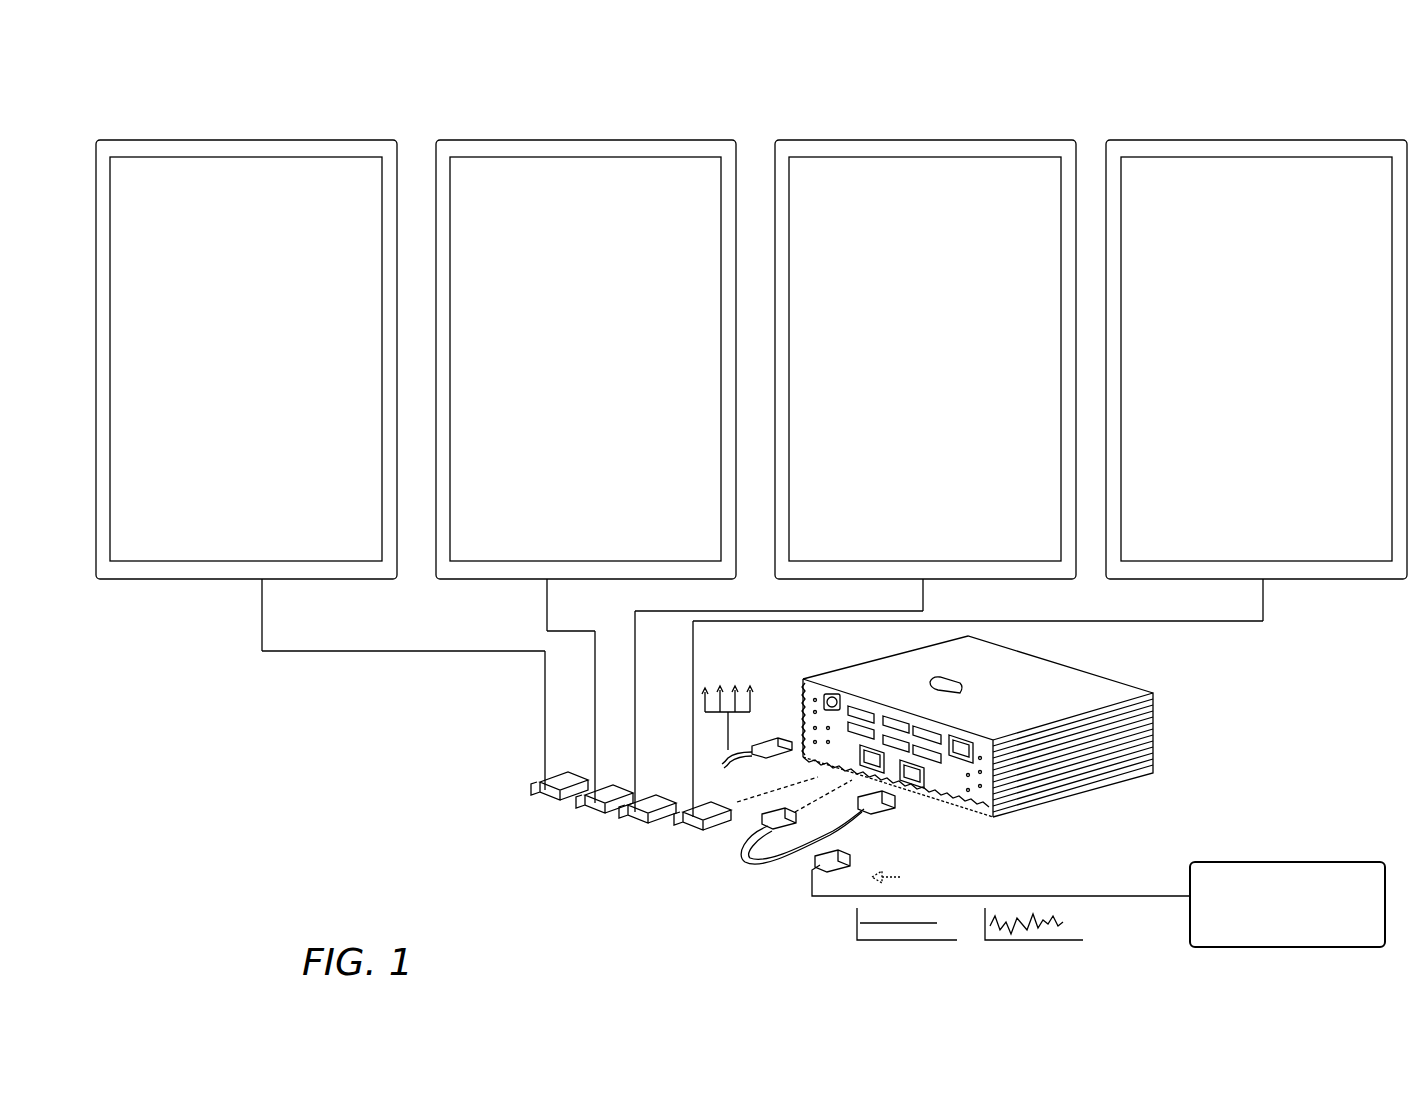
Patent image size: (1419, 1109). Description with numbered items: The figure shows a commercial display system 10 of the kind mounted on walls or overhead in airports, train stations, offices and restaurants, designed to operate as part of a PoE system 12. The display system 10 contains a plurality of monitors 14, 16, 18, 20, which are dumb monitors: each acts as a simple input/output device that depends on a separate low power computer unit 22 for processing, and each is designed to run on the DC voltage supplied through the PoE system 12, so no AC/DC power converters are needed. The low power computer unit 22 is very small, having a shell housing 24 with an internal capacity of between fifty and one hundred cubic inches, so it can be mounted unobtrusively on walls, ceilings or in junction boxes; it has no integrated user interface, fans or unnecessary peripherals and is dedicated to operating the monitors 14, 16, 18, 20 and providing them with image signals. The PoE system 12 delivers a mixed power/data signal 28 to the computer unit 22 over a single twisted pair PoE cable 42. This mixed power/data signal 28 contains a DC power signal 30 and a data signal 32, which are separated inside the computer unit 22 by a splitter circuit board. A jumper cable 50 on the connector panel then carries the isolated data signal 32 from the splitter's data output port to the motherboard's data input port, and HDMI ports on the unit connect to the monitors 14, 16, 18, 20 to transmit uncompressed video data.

The commercial display system 10 is at (255, 762).
The PoE system 12 is at (1310, 860).
The monitor 14 is at (177, 140).
The monitor 16 is at (547, 140).
The monitor 18 is at (882, 140).
The monitor 20 is at (1225, 140).
The low power computer unit 22 is at (1153, 750).
The shell housing 24 is at (1085, 680).
The mixed power/data signal 28 is at (1040, 860).
The DC power signal 30 is at (853, 920).
The data signal 32 is at (1075, 945).
The PoE cable 42 is at (790, 870).
The jumper cable 50 is at (735, 855).